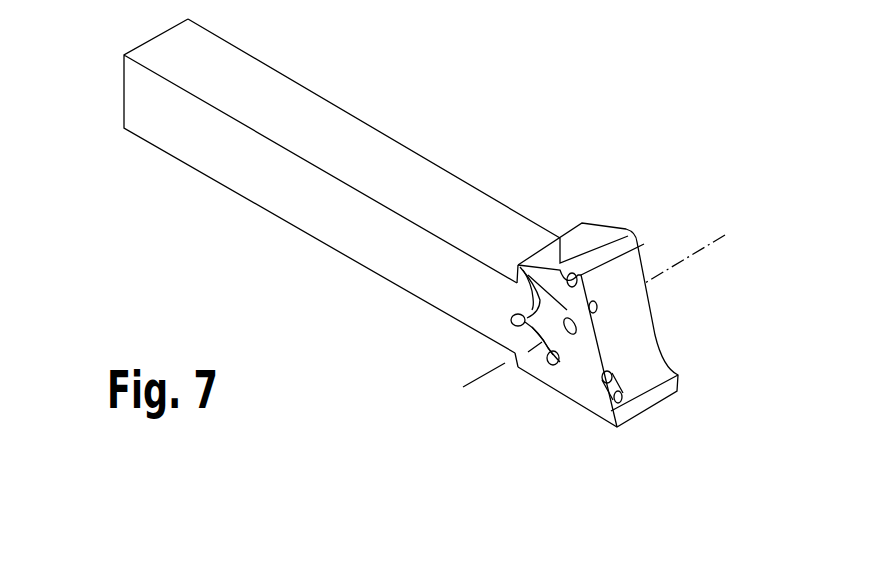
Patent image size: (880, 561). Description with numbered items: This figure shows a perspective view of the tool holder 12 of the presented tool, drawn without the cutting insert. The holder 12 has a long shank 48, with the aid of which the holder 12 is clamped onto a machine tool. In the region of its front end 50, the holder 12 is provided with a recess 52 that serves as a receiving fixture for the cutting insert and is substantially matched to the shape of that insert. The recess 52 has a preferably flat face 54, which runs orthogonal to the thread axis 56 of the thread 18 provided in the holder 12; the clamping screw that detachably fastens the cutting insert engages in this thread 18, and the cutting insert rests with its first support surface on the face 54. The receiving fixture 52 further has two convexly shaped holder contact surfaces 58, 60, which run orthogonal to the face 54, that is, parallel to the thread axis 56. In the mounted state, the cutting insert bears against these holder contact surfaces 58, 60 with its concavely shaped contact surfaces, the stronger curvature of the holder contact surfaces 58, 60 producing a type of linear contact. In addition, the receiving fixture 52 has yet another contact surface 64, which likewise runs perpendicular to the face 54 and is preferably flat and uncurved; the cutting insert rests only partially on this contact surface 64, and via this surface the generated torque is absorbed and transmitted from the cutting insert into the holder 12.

The holder 12 is at (446, 251).
The thread 18 is at (525, 322).
The shank 48 is at (322, 213).
The front end 50 is at (741, 397).
The recess 52 is at (587, 355).
The face 54 is at (557, 287).
The thread axis 56 is at (717, 242).
The holder contact surface 58 is at (512, 321).
The holder contact surface 60 is at (543, 368).
The contact surface 64 is at (601, 395).